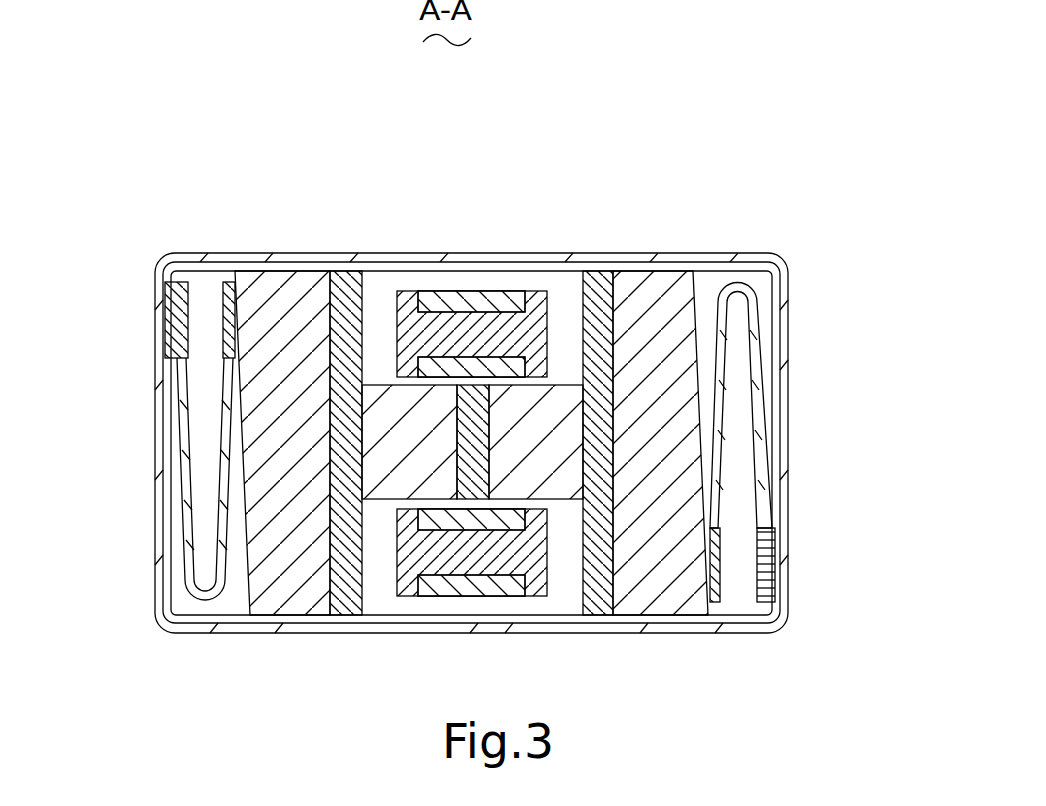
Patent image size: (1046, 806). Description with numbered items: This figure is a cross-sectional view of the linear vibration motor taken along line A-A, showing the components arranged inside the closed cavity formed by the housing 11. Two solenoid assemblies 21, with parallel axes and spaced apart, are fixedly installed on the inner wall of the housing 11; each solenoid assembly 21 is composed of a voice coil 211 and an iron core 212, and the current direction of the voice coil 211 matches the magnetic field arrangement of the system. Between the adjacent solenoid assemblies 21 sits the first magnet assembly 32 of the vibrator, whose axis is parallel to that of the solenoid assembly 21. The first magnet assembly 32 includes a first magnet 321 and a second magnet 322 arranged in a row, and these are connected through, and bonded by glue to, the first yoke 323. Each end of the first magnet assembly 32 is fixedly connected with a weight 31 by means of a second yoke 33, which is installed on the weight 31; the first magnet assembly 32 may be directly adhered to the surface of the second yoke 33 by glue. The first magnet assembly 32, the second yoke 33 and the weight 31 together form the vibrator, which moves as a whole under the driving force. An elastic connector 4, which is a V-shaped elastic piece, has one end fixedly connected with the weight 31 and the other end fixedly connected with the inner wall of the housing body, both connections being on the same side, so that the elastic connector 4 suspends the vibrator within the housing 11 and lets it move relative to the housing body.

The housing 11 is at (160, 383).
The elastic connector 4 is at (192, 505).
The solenoid assembly 21 is at (455, 347).
The voice coil 211 is at (517, 392).
The iron core 212 is at (410, 300).
The weight 31 is at (300, 290).
The second yoke 33 is at (600, 290).
The first magnet assembly 32 is at (649, 440).
The first magnet 321 is at (530, 468).
The second magnet 322 is at (415, 472).
The first yoke 323 is at (470, 418).